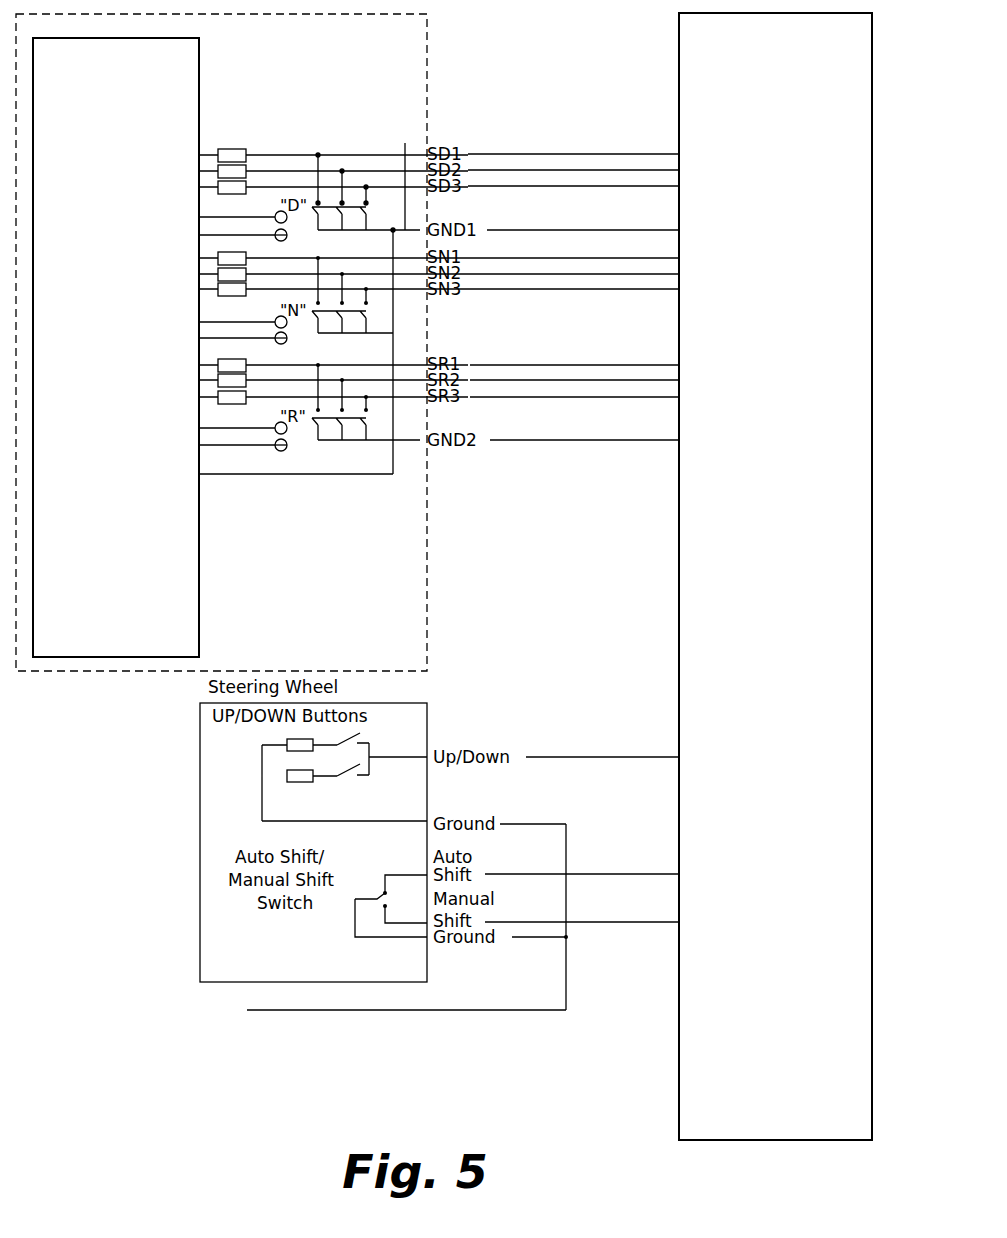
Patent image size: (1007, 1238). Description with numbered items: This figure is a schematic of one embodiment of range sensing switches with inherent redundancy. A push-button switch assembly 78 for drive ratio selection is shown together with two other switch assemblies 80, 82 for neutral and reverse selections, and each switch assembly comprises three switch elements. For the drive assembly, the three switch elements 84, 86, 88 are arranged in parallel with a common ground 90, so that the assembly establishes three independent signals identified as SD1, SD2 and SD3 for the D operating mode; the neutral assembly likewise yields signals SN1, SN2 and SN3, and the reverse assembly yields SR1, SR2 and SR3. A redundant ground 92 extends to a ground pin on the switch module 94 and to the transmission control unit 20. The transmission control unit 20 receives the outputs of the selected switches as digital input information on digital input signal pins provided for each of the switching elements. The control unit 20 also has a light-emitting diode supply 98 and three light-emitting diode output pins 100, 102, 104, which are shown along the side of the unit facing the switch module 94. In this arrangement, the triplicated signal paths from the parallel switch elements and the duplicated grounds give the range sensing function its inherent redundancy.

The transmission control unit 20 is at (801, 647).
The push-button switch assembly for drive ratio selection 78 is at (474, 139).
The switch assembly for neutral selection 80 is at (487, 219).
The switch assembly for reverse selection 82 is at (486, 352).
The switch element 84 is at (317, 199).
The switch element 86 is at (341, 199).
The switch element 88 is at (365, 199).
The common ground 90 is at (405, 143).
The redundant ground 92 is at (380, 474).
The switch module 94 is at (121, 567).
The light-emitting diode supply 98 is at (838, 156).
The light-emitting diode output pin 100 is at (838, 221).
The light-emitting diode output pin 102 is at (838, 322).
The light-emitting diode output pin 104 is at (840, 393).